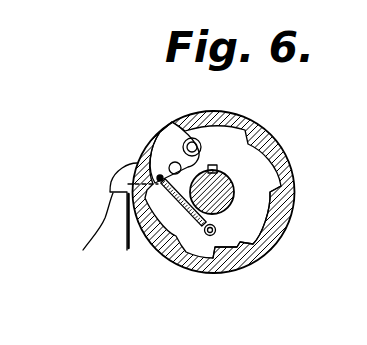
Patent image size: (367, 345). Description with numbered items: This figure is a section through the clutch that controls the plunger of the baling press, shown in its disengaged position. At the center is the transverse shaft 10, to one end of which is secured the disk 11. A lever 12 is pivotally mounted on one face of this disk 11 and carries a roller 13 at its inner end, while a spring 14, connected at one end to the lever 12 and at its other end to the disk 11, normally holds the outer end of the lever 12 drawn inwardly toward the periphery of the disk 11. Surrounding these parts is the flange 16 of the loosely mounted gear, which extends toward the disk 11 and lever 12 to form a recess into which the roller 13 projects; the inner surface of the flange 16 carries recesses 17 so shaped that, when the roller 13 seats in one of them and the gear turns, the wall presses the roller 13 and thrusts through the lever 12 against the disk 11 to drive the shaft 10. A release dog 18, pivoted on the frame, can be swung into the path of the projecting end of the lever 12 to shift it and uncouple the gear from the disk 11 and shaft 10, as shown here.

The transverse shaft 10 is at (227, 188).
The disk 11 is at (279, 222).
The lever 12 is at (180, 157).
The roller 13 is at (191, 140).
The spring 14 is at (190, 207).
The flange 16 is at (230, 270).
The recesses 17 is at (262, 258).
The release dog 18 is at (107, 212).